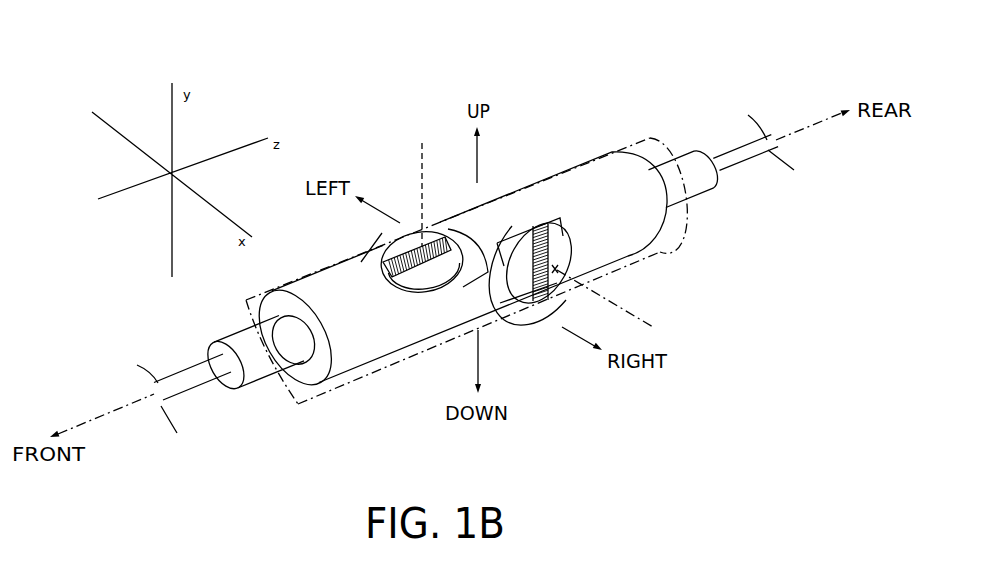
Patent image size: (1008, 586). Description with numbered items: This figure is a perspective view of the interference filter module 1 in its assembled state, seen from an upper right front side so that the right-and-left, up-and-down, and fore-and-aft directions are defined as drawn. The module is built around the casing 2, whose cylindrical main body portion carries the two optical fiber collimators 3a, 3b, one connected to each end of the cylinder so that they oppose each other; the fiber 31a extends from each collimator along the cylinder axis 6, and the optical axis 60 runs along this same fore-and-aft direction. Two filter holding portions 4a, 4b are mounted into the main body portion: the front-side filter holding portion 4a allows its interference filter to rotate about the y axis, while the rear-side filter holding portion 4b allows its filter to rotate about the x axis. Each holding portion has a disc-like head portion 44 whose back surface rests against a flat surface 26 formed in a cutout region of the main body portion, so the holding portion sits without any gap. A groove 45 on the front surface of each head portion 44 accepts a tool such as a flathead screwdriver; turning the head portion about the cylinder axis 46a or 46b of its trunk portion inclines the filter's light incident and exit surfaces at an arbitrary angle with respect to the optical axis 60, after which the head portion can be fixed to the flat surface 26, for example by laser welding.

The interference filter module 1 is at (561, 92).
The casing 2 is at (684, 262).
The optical fiber collimator 3a is at (250, 331).
The optical fiber collimator 3b is at (672, 159).
The filter holding portion 4a is at (380, 235).
The filter holding portion 4b is at (519, 308).
The cylinder axis 6 is at (128, 414).
The optical axis 60 is at (461, 270).
The flat surface 26 is at (524, 227).
The optical fiber 31a is at (183, 373).
The head portion 44 is at (404, 292).
The groove 45 is at (437, 231).
The cylinder axis 46a is at (421, 152).
The cylinder axis 46b is at (657, 325).